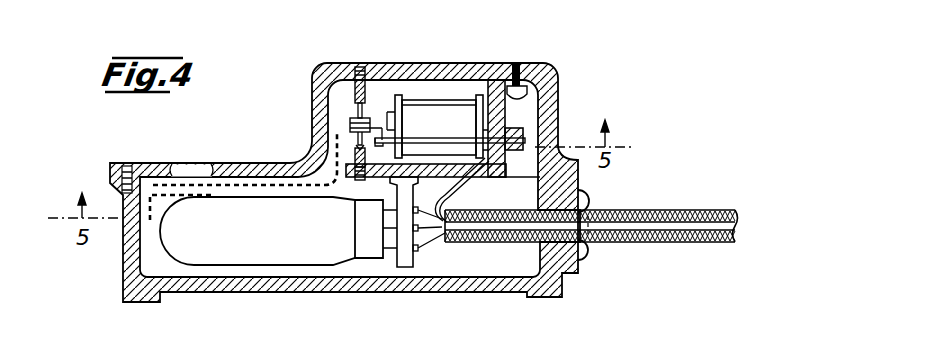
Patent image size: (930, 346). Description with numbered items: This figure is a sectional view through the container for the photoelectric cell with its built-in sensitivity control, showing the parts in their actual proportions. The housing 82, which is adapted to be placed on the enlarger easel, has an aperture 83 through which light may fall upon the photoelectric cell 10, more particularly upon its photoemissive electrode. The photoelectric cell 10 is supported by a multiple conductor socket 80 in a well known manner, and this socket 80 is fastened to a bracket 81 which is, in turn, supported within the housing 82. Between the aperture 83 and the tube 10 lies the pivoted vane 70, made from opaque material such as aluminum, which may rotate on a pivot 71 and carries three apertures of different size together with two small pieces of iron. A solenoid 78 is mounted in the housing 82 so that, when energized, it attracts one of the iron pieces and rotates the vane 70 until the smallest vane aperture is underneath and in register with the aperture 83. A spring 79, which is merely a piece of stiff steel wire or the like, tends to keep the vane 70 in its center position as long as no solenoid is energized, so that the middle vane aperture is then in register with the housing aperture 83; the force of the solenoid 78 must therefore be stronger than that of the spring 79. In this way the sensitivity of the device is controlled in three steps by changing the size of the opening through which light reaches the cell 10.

The photoelectric cell 10 is at (273, 198).
The pivoted vane 70 is at (255, 163).
The pivot 71 is at (348, 100).
The solenoid 78 is at (412, 97).
The spring 79 is at (424, 144).
The multiple conductor socket 80 is at (405, 268).
The bracket 81 is at (520, 191).
The housing 82 is at (461, 63).
The aperture 83 is at (197, 163).